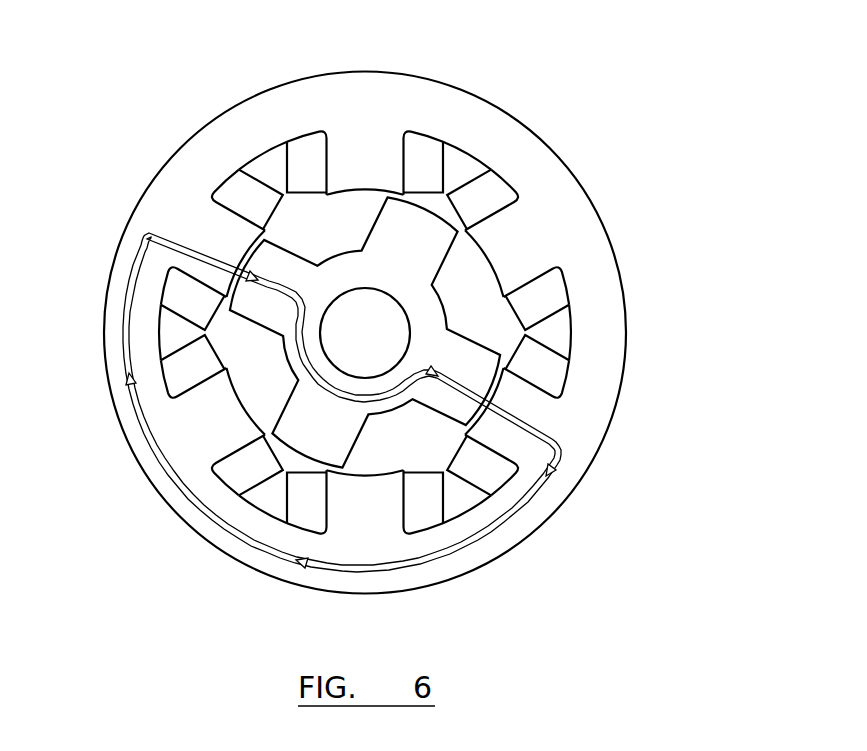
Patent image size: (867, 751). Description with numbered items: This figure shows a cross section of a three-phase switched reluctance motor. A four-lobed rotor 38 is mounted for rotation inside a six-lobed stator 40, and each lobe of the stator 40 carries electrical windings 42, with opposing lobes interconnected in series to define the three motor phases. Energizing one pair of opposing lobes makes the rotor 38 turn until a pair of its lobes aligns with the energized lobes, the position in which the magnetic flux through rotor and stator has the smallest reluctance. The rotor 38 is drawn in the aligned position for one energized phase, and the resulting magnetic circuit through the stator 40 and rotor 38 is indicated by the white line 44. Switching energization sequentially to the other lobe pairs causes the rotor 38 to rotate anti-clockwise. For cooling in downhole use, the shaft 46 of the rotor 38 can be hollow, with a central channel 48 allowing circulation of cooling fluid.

The rotor 38 is at (497, 343).
The stator 40 is at (490, 95).
The electrical windings 42 is at (547, 293).
The white line 44 is at (505, 531).
The shaft 46 is at (290, 363).
The central channel 48 is at (352, 318).